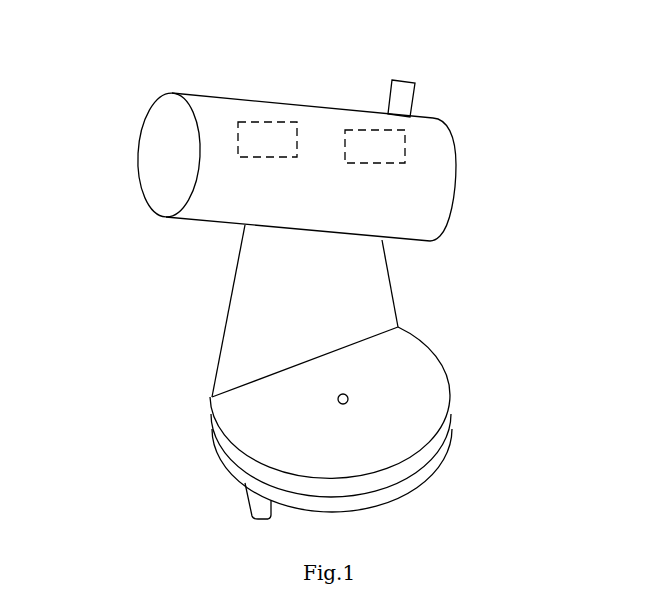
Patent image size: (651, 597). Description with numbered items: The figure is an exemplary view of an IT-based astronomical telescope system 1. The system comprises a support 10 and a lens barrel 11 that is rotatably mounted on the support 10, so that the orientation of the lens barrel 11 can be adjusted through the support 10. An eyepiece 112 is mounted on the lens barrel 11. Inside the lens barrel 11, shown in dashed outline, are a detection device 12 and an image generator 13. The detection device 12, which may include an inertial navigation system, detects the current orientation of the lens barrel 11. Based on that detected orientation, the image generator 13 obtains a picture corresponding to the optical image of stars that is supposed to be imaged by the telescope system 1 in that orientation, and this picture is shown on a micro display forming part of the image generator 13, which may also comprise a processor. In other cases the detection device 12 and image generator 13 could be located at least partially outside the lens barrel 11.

The IT-based astronomical telescope system 1 is at (128, 110).
The support 10 is at (385, 395).
The lens barrel 11 is at (410, 205).
The detection device 12 is at (265, 131).
The image generator 13 is at (359, 133).
The eyepiece 112 is at (402, 100).